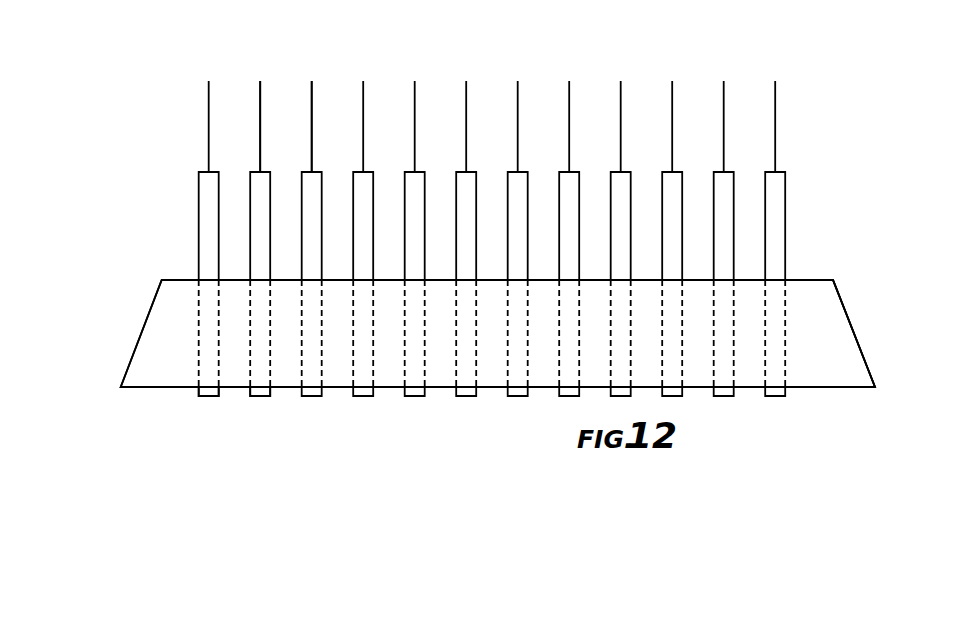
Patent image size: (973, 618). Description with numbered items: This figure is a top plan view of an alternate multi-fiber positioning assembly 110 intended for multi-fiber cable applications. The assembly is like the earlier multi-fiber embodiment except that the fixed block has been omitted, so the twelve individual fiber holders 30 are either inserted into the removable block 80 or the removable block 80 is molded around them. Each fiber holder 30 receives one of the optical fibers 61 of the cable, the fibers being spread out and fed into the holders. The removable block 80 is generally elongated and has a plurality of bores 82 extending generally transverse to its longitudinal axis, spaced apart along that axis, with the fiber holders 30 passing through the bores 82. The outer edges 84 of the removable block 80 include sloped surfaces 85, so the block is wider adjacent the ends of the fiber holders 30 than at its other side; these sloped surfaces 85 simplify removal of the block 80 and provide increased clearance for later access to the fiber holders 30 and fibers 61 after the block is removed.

The multi-fiber positioning assembly 110 is at (84, 197).
The fiber holder 30 is at (312, 213).
The optical fiber 61 is at (311, 105).
The removable block 80 is at (808, 280).
The outer edge 84 is at (855, 327).
The sloped surface 85 is at (864, 360).
The bore 82 is at (253, 360).